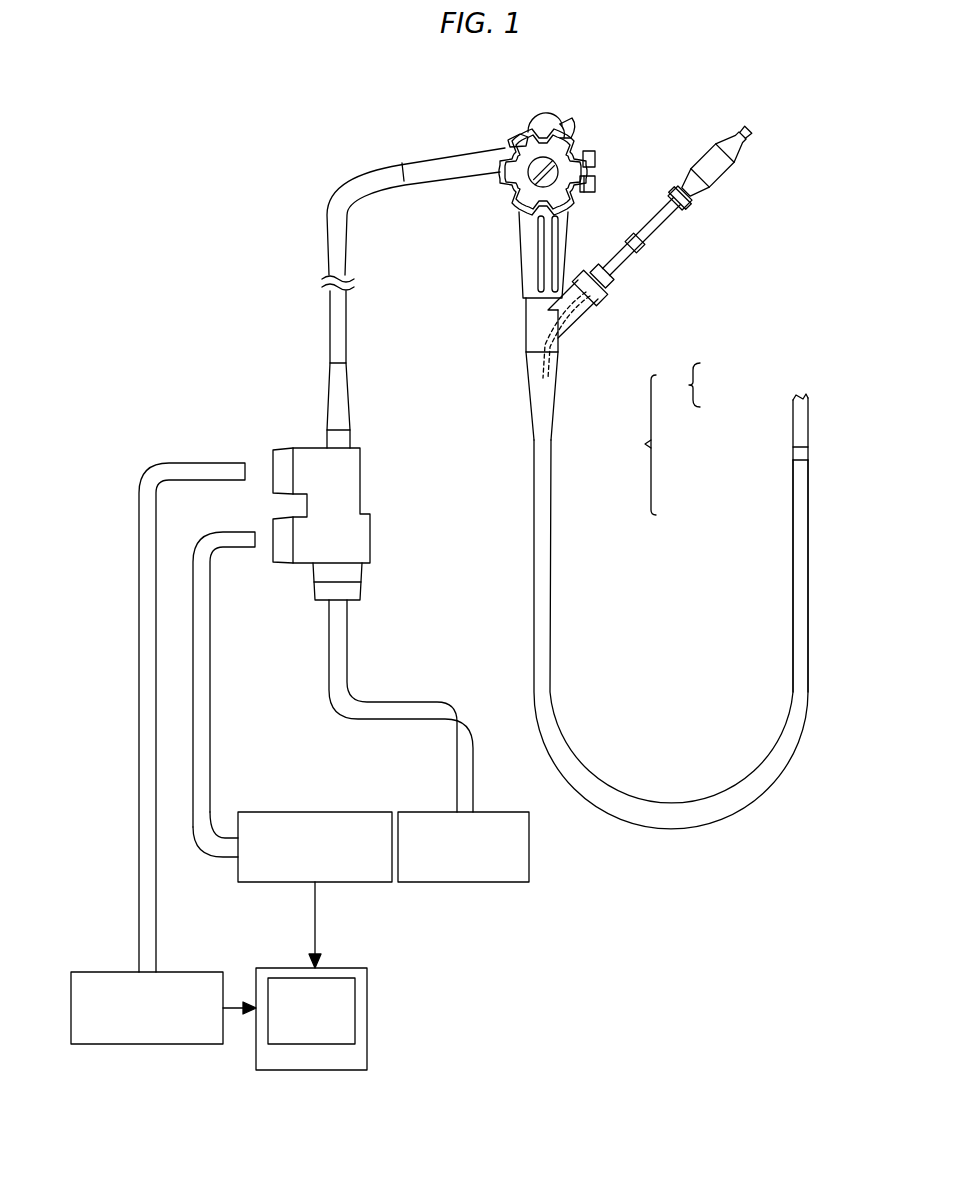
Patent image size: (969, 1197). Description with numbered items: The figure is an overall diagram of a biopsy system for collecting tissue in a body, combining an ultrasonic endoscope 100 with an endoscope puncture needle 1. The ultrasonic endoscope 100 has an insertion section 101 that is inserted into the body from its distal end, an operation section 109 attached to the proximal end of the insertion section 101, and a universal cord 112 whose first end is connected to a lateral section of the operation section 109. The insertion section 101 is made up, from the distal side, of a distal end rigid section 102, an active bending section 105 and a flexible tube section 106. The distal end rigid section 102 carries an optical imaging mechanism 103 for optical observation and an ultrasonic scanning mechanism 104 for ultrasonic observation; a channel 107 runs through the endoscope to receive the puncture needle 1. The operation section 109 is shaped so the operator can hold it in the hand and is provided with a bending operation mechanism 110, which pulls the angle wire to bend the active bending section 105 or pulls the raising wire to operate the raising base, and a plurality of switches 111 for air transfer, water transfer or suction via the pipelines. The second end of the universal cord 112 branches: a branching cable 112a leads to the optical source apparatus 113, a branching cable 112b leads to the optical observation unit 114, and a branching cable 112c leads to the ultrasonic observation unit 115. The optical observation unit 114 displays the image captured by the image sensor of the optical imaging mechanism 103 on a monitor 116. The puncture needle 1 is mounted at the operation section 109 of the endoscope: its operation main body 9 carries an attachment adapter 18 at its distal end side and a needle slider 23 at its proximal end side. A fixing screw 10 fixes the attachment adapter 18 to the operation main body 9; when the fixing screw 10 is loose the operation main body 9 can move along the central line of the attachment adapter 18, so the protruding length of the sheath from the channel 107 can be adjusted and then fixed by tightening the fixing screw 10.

The endoscope puncture needle 1 is at (707, 180).
The operation main body 9 is at (660, 228).
The fixing screw 10 is at (683, 208).
The attachment adapter 18 is at (623, 273).
The needle slider 23 is at (722, 162).
The ultrasonic endoscope 100 is at (619, 444).
The insertion section 101 is at (671, 596).
The distal end rigid section 102 is at (731, 405).
The optical imaging mechanism 103 is at (795, 430).
The ultrasonic scanning mechanism 104 is at (805, 400).
The active bending section 105 is at (793, 454).
The flexible tube section 106 is at (795, 570).
The channel 107 is at (540, 337).
The operation section 109 is at (511, 287).
The bending operation mechanism 110 is at (521, 143).
The switches 111 is at (599, 170).
The universal cord 112 is at (337, 196).
The branching cable 112a is at (410, 703).
The branching cable 112b is at (198, 552).
The branching cable 112c is at (153, 478).
The optical source apparatus 113 is at (497, 812).
The optical observation unit 114 is at (323, 812).
The ultrasonic observation unit 115 is at (183, 978).
The monitor 116 is at (362, 1027).